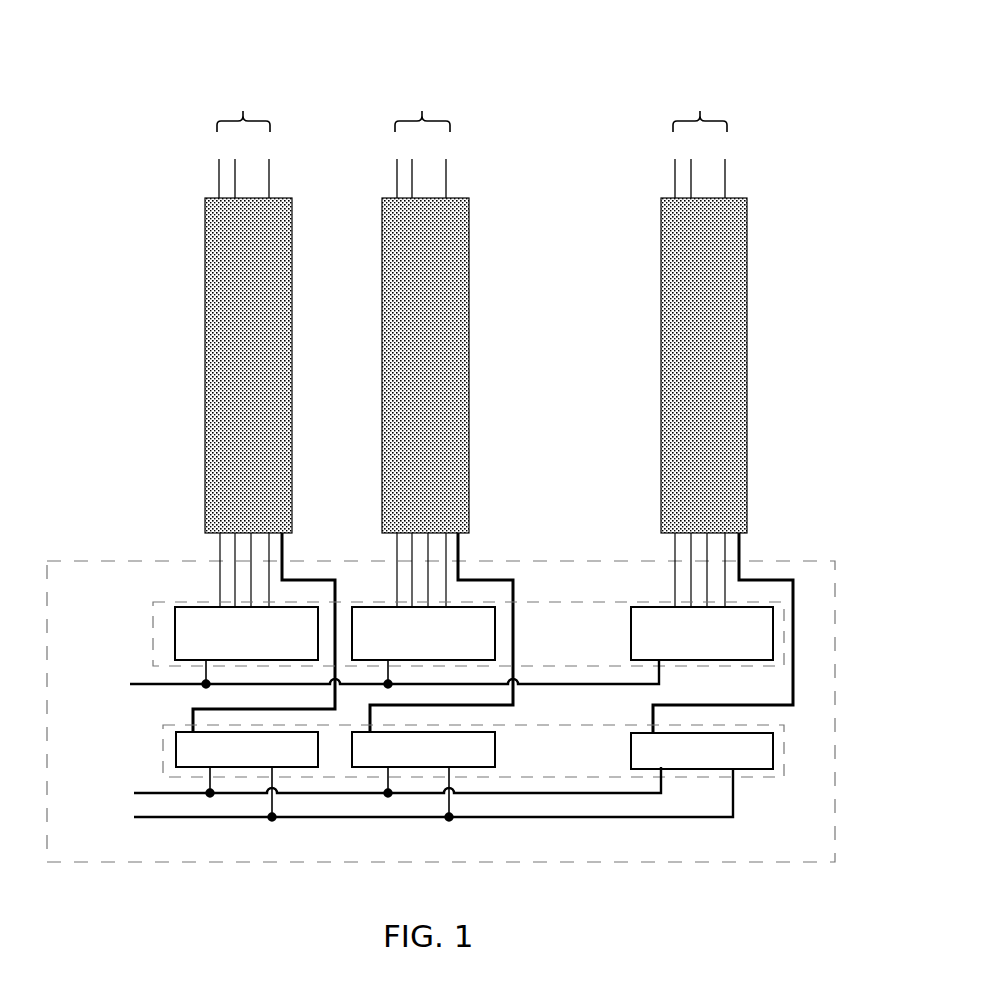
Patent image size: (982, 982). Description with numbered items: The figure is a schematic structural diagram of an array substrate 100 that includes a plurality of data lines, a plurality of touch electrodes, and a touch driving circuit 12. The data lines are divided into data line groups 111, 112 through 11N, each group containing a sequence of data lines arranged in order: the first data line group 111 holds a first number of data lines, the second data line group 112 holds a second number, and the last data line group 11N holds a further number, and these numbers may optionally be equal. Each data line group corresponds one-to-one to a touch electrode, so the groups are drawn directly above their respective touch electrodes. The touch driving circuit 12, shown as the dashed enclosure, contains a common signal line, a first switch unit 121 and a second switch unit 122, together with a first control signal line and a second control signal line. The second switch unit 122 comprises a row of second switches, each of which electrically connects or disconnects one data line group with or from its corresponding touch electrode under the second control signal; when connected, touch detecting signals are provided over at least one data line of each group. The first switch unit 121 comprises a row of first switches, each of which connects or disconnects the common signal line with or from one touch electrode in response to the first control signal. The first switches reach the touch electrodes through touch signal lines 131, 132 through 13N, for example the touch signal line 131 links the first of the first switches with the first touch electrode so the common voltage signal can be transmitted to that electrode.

The array substrate 100 is at (806, 45).
The data line group 111 is at (248, 311).
The data line group 112 is at (425, 311).
The data line group 11N is at (702, 311).
The touch signal line 131 is at (285, 549).
The touch signal line 132 is at (461, 549).
The touch signal line 13N is at (742, 549).
The touch driving circuit 12 is at (812, 562).
The second switch unit 122 is at (150, 633).
The first switch unit 121 is at (160, 750).